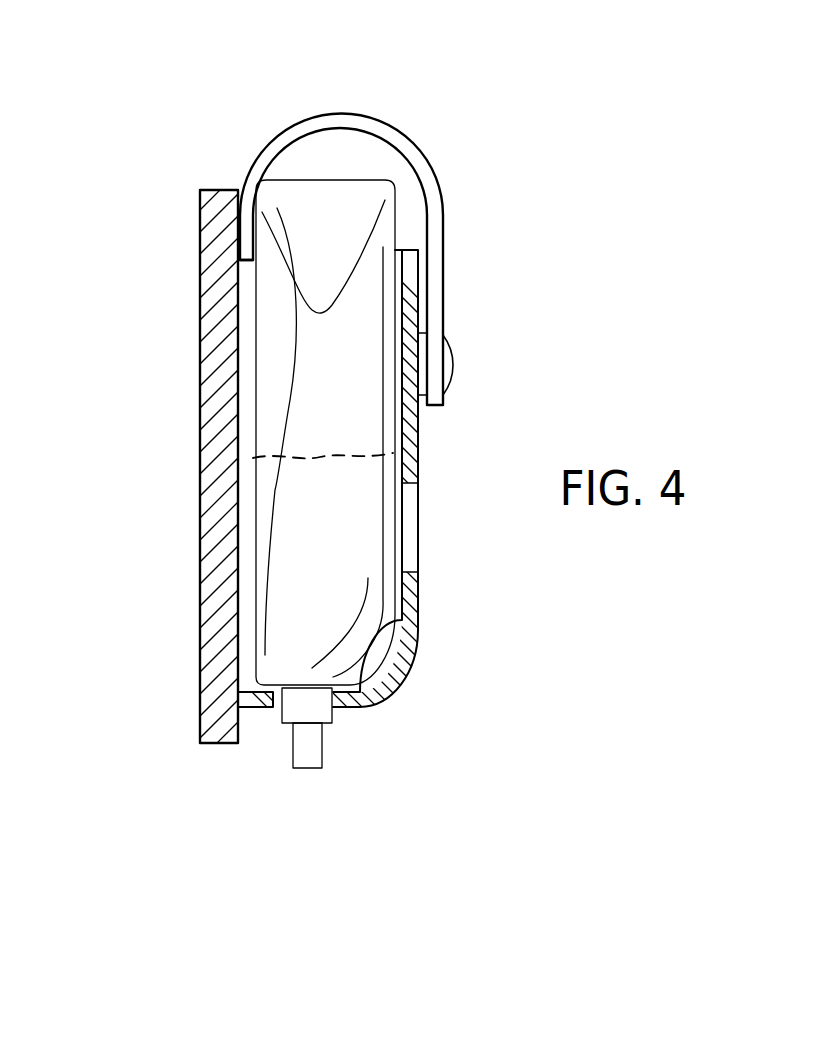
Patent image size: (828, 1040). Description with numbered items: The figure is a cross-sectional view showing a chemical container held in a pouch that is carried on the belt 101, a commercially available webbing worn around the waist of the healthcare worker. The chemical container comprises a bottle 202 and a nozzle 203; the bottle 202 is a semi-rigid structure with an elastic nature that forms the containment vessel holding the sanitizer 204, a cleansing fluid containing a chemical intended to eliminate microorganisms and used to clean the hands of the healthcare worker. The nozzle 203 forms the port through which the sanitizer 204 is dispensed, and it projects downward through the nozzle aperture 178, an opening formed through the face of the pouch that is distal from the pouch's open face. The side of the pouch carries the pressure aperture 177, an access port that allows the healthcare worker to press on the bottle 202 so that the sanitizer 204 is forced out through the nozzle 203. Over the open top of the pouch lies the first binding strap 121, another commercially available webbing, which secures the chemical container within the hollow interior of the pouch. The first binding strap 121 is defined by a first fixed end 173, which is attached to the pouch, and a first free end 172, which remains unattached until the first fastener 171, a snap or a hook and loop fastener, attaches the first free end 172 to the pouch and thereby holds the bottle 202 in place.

The belt 101 is at (222, 422).
The first binding strap 121 is at (430, 193).
The first fastener 171 is at (447, 363).
The first free end 172 is at (432, 406).
The first fixed end 173 is at (244, 259).
The pressure aperture 177 is at (408, 540).
The nozzle aperture 178 is at (333, 708).
The bottle 202 is at (318, 205).
The nozzle 203 is at (312, 768).
The sanitizer 204 is at (313, 458).